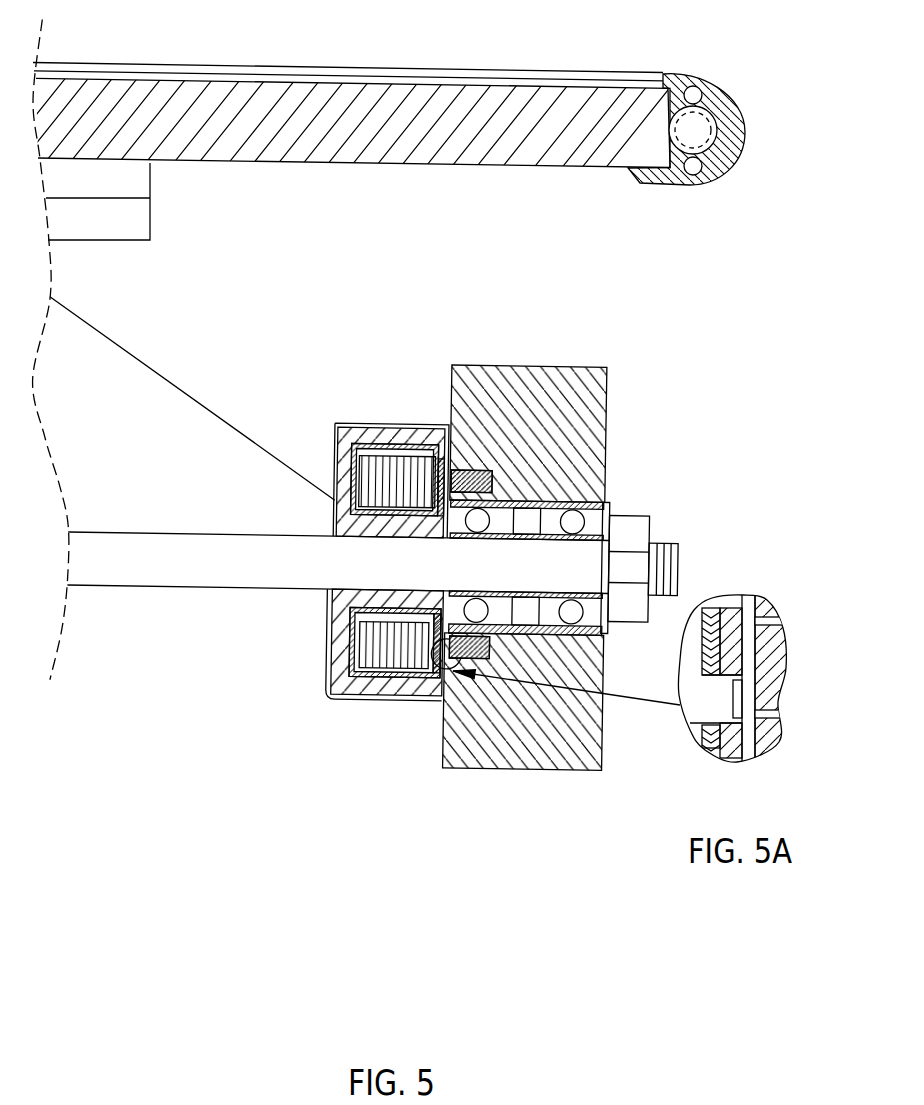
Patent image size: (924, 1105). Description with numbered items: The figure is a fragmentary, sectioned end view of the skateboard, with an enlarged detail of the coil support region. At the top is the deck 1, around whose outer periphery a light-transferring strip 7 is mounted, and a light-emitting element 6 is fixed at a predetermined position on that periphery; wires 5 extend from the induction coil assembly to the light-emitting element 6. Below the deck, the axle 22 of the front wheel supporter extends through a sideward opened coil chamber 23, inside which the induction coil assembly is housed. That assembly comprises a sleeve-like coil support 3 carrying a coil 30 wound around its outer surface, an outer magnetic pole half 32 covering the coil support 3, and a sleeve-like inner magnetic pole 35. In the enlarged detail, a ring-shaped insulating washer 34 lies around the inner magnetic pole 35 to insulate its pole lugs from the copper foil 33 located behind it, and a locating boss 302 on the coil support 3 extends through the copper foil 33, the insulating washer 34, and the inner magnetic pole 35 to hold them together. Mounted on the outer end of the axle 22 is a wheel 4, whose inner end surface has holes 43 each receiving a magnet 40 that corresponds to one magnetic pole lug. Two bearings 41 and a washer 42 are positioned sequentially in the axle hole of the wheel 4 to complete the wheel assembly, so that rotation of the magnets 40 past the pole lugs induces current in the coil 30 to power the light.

In FIG. 5, the deck 1 is at (285, 81).
In FIG. 5, the light-transferring strip 7 is at (727, 88).
In FIG. 5, the light-emitting element 6 is at (735, 146).
In FIG. 5, the wires 5 is at (120, 354).
In FIG. 5, the wheel 4 is at (604, 445).
In FIG. 5, the bearings 41 is at (588, 503).
In FIG. 5, the washer 42 is at (606, 628).
In FIG. 5, the axle 22 is at (677, 563).
In FIG. 5, the coil 30 is at (392, 465).
In FIG. 5, the outer magnetic pole half 32 is at (440, 460).
In FIG. 5, the inner magnetic pole 35 is at (351, 614).
In FIG. 5, the coil chamber 23 is at (342, 689).
In FIG. 5A, the coil support 3 is at (690, 722).
In FIG. 5A, the holes 43 is at (773, 620).
In FIG. 5A, the magnet 40 is at (770, 663).
In FIG. 5A, the locating boss 302 is at (720, 705).
In FIG. 5A, the insulating washer 34 is at (717, 745).
In FIG. 5A, the copper foil 33 is at (703, 742).